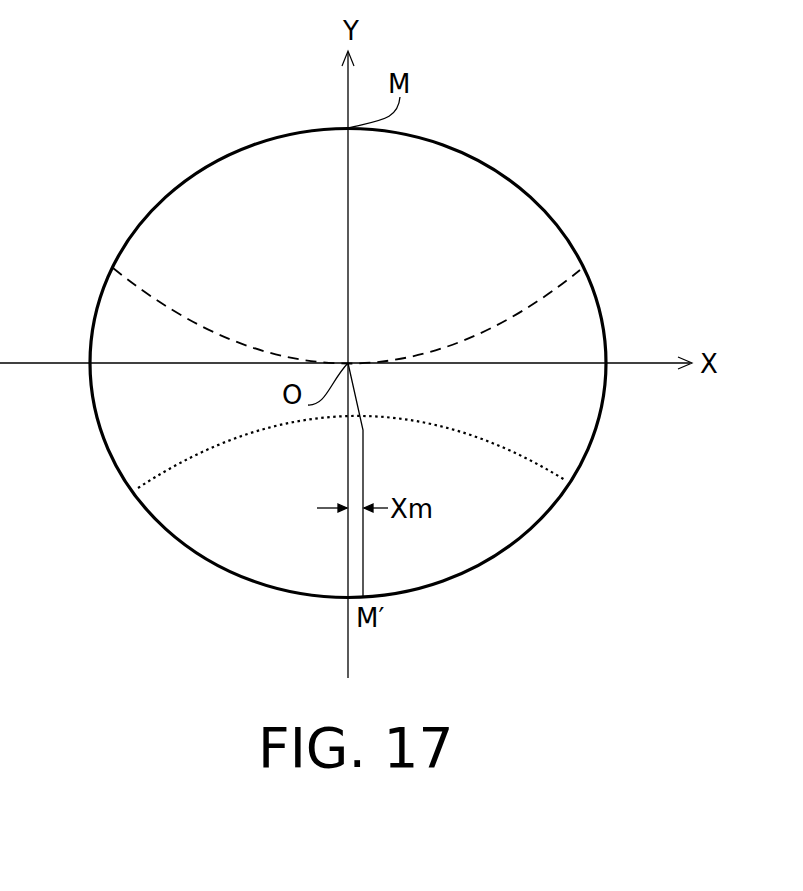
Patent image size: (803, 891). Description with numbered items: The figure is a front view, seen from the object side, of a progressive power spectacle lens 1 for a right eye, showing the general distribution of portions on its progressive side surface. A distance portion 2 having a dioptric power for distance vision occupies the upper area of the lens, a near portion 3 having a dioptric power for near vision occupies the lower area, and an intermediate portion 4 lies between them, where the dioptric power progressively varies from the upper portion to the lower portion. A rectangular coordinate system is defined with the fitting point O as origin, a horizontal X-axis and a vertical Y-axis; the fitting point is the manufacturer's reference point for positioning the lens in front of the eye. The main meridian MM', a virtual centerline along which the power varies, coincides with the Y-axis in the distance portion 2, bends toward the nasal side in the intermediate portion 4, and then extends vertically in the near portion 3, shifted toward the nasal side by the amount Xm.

The progressive power spectacle lens 1 is at (470, 158).
The distance portion 2 is at (513, 242).
The near portion 3 is at (490, 527).
The intermediate portion 4 is at (570, 428).